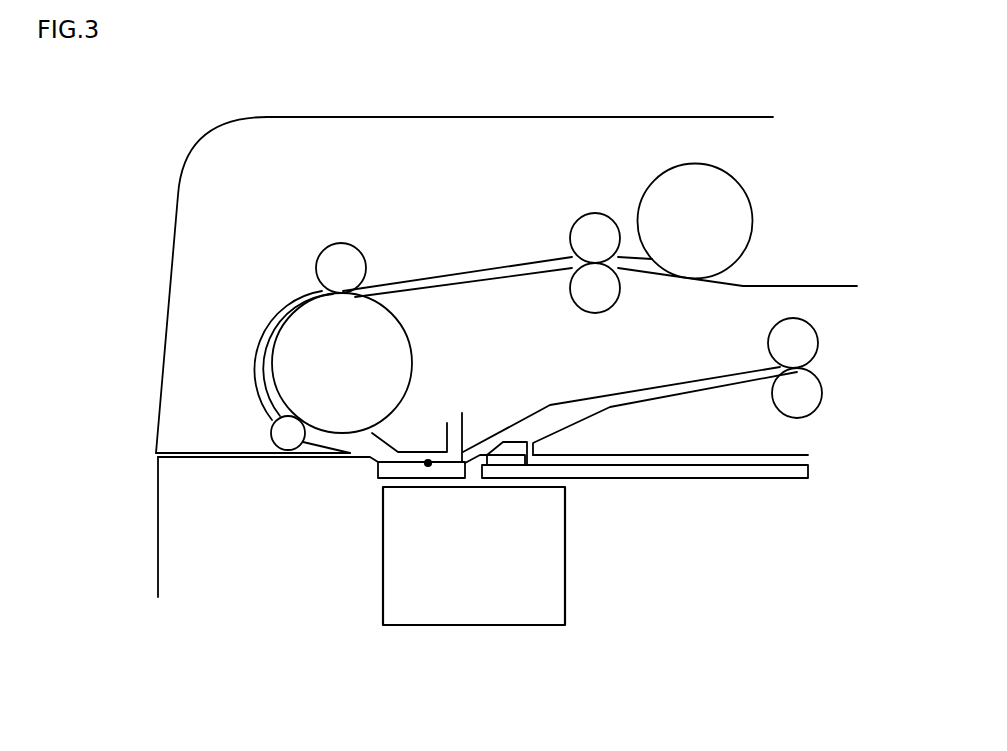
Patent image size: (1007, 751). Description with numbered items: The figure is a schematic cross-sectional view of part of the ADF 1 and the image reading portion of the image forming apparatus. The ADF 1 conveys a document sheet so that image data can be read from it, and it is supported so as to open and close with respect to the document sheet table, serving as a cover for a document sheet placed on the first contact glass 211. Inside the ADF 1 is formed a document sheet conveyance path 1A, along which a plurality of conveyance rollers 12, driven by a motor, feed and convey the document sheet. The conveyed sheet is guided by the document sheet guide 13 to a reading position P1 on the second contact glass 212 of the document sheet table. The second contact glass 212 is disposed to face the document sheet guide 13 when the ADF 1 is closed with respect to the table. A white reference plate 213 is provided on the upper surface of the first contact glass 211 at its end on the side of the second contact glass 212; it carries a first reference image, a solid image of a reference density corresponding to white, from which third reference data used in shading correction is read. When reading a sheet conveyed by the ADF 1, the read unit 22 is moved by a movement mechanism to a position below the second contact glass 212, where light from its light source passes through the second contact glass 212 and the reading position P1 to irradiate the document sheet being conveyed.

The ADF 1 is at (160, 116).
The document sheet conveyance path 1A is at (485, 270).
The conveyance rollers 12 is at (412, 330).
The document sheet guide 13 is at (421, 447).
The read unit 22 is at (566, 551).
The first contact glass 211 is at (778, 479).
The second contact glass 212 is at (373, 470).
The white reference plate 213 is at (511, 470).
The reading position P1 is at (428, 467).